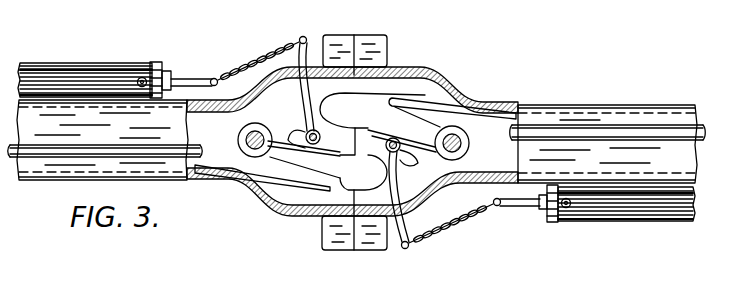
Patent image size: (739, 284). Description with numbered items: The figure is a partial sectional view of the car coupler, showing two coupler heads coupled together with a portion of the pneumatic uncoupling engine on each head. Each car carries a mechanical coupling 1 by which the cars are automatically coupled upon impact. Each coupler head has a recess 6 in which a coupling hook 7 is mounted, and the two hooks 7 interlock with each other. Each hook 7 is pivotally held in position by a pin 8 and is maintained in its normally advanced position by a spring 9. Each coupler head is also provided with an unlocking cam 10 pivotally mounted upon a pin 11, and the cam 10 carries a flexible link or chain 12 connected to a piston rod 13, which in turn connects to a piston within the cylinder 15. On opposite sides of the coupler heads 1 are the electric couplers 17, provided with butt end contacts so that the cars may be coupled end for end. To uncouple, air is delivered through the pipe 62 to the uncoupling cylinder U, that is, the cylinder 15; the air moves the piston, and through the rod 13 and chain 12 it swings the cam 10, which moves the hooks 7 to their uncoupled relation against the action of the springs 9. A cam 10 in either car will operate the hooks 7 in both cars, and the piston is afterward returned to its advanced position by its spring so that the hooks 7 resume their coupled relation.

The mechanical coupling 1 is at (472, 93).
The recess 6 is at (420, 80).
The coupling hook 7 is at (365, 102).
The pin 8 is at (258, 132).
The spring 9 is at (450, 111).
The unlocking cam 10 is at (302, 125).
The pin 11 is at (407, 133).
The flexible link or chain 12 is at (250, 63).
The piston rod 13 is at (192, 77).
The cylinder 15 is at (52, 63).
The electric coupler 17 is at (368, 33).
The pipe 62 is at (138, 79).
The uncoupling cylinder U is at (143, 61).